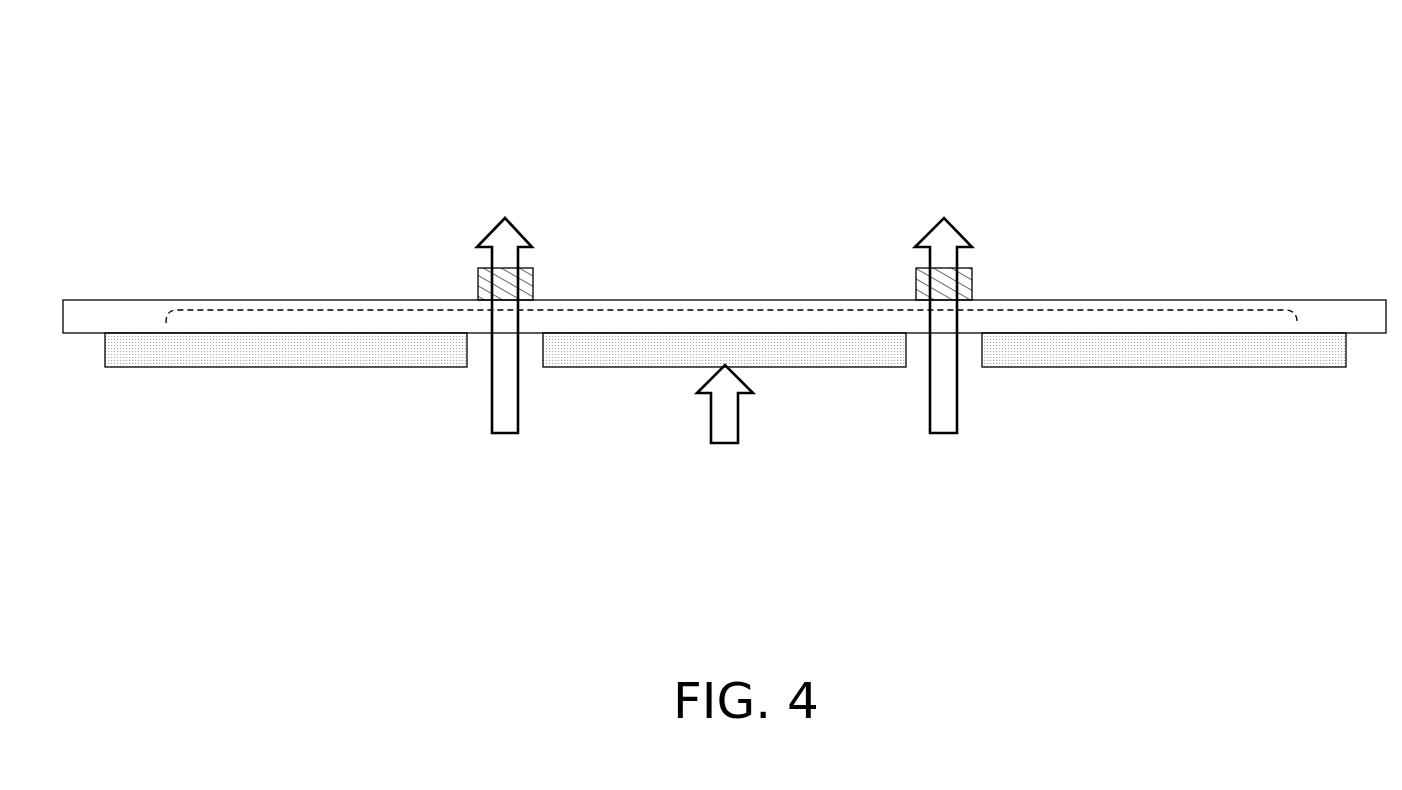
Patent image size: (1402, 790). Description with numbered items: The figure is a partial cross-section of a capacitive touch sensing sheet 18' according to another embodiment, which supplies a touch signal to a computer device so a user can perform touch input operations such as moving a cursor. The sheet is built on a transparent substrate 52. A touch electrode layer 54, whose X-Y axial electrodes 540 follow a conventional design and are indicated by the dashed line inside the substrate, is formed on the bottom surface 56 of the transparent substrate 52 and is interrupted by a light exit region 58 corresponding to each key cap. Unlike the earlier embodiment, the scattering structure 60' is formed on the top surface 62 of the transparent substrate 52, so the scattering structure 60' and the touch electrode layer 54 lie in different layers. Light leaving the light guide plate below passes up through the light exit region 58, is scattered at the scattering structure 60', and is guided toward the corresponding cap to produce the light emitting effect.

The capacitive touch sensing sheet 18' is at (1237, 65).
The transparent substrate 52 is at (153, 313).
The X-Y axial electrodes 540 is at (723, 308).
The touch electrode layer 54 is at (95, 352).
The bottom surface 56 is at (1362, 335).
The light exit region 58 is at (533, 357).
The scattering structure 60' is at (694, 247).
The top surface 62 is at (1320, 300).